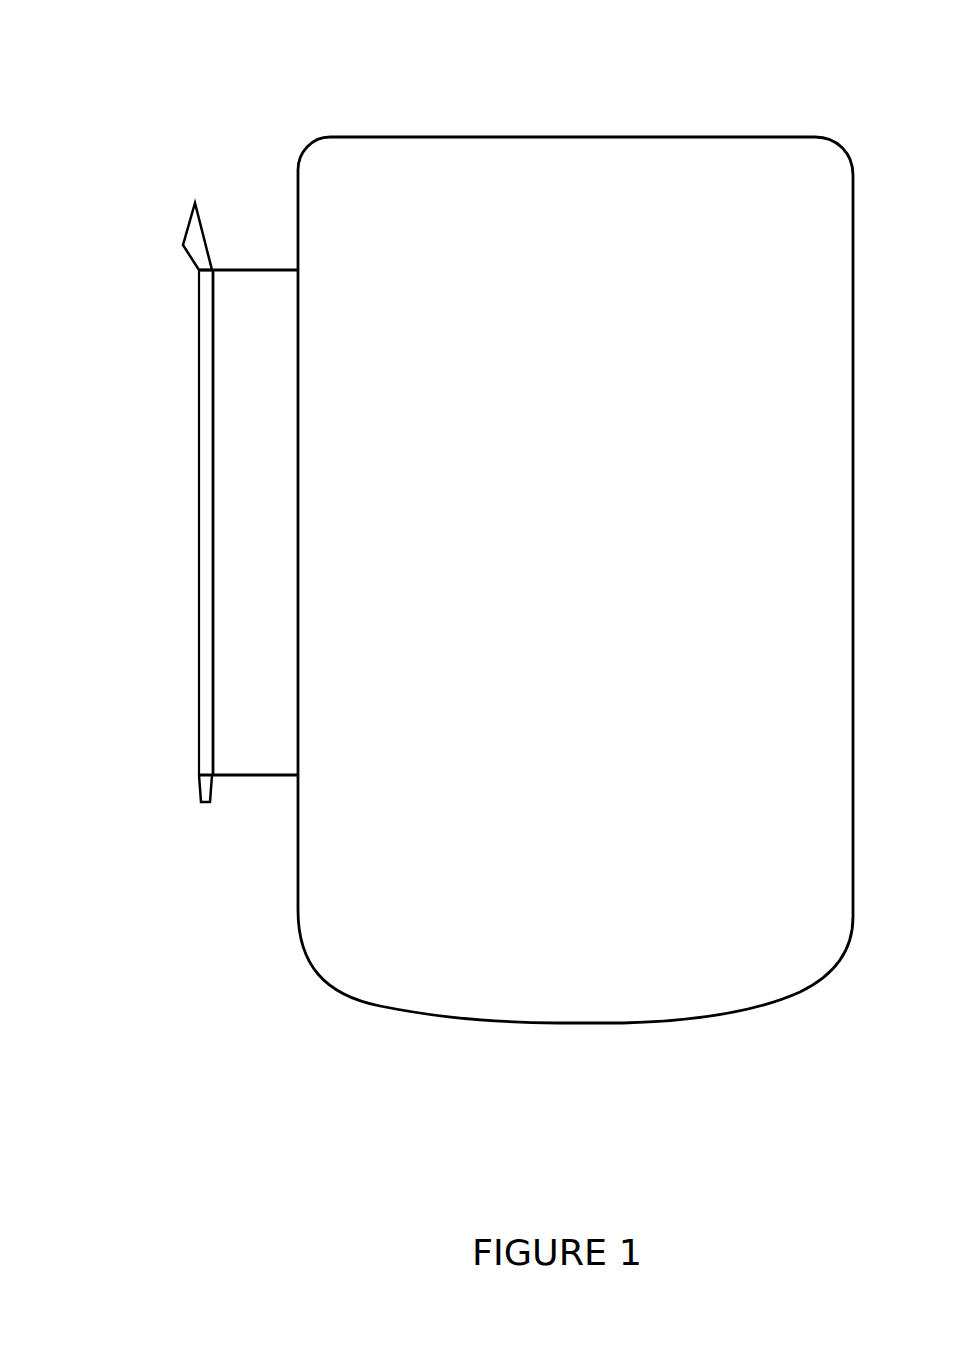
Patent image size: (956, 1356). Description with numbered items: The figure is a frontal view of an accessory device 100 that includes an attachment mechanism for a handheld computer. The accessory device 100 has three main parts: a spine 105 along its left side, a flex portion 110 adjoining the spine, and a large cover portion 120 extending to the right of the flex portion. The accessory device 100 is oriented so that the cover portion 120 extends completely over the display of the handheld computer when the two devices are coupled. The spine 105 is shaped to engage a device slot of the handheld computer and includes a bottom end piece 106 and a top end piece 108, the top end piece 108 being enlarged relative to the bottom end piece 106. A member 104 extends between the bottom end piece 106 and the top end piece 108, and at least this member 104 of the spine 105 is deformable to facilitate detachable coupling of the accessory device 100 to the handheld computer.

The accessory device 100 is at (439, 604).
The member 104 is at (213, 461).
The spine 105 is at (198, 618).
The bottom end piece 106 is at (205, 790).
The top end piece 108 is at (195, 241).
The flex portion 110 is at (252, 298).
The cover portion 120 is at (451, 190).